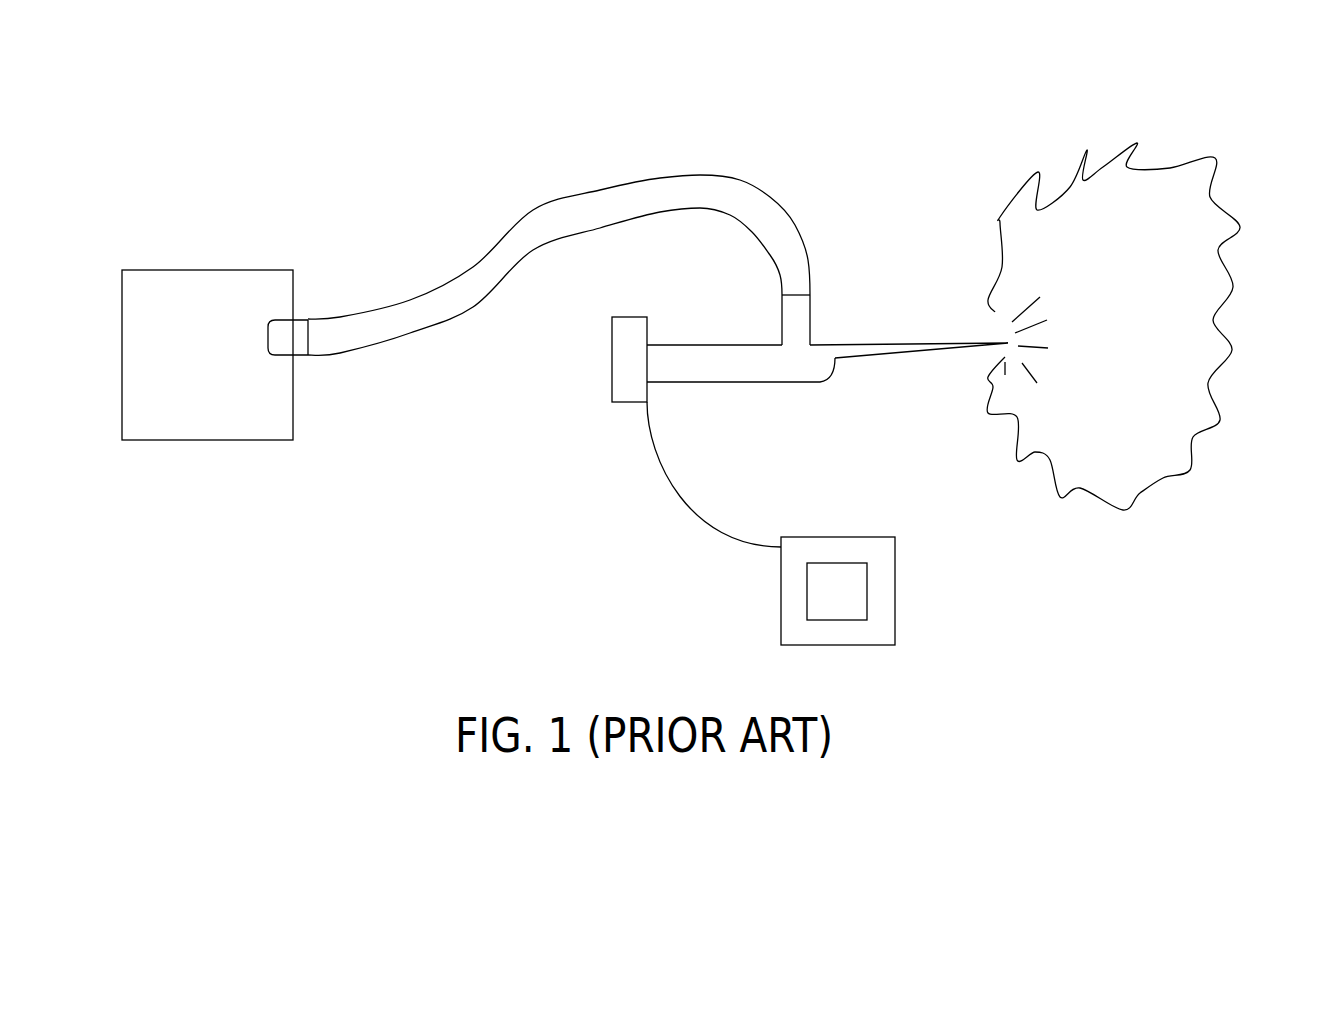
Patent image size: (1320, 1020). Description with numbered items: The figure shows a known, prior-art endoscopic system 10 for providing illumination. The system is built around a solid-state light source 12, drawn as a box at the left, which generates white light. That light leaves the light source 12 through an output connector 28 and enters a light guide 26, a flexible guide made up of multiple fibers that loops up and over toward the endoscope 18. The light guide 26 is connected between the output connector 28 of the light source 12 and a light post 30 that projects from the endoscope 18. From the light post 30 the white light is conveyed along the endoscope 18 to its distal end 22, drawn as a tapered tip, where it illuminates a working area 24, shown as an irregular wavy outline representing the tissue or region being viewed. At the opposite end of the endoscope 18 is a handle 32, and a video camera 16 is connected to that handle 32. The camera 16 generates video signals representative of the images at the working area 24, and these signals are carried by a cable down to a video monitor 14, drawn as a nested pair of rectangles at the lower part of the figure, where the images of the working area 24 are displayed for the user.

The endoscopic system 10 is at (390, 228).
The solid-state light source 12 is at (190, 270).
The video monitor 14 is at (833, 645).
The camera 16 is at (612, 370).
The endoscope 18 is at (847, 364).
The distal end 22 is at (992, 329).
The working area 24 is at (1217, 167).
The light guide 26 is at (665, 175).
The output connector 28 is at (305, 322).
The light post 30 is at (812, 320).
The handle 32 is at (730, 382).